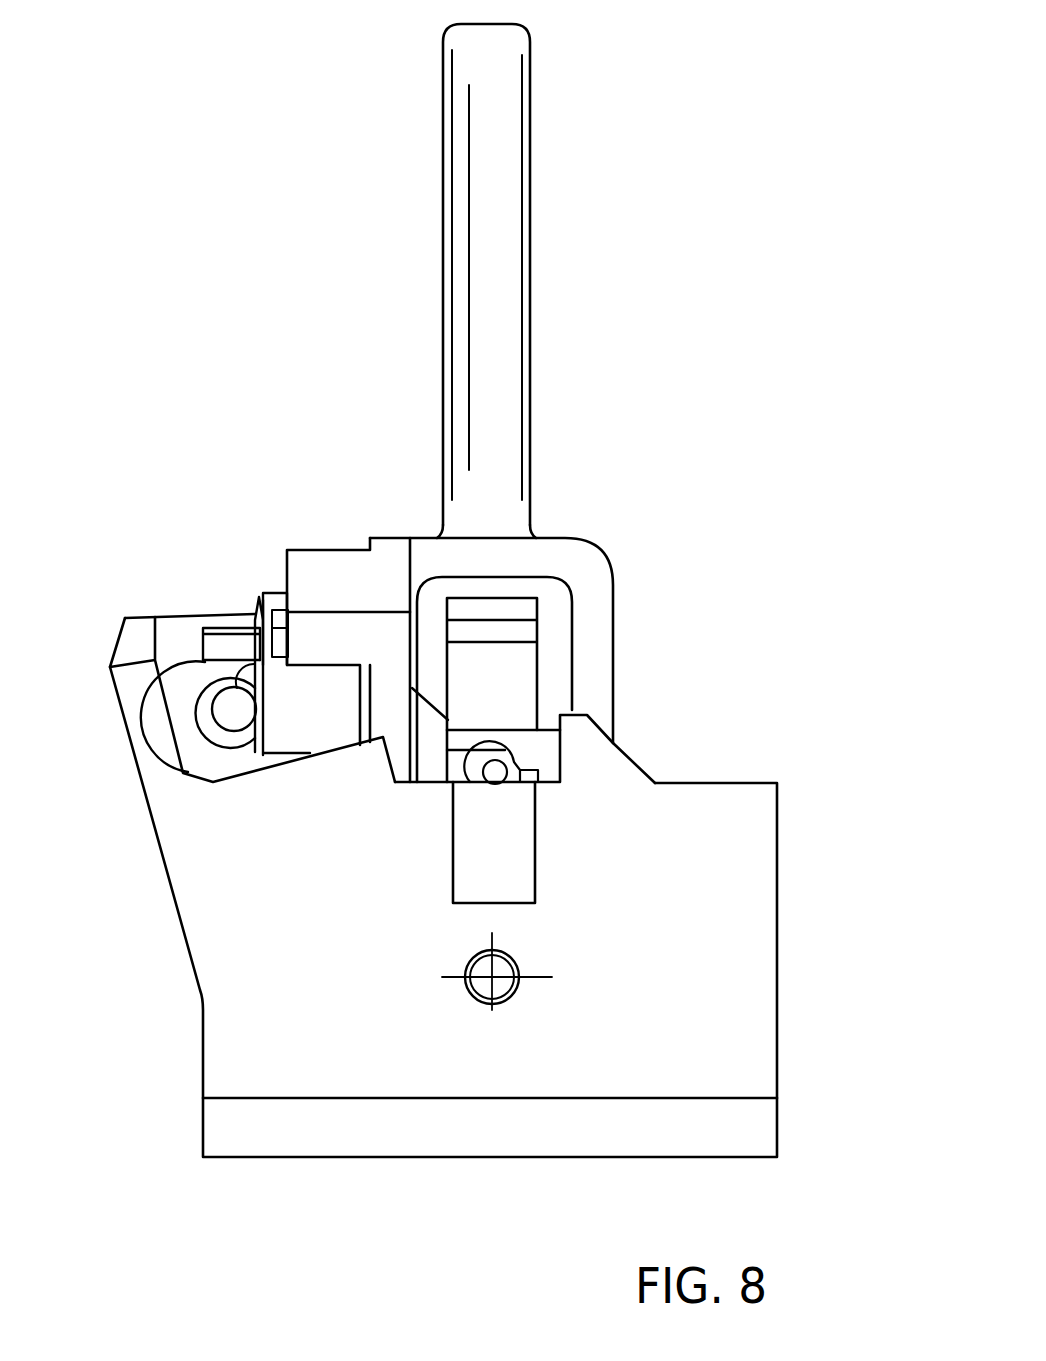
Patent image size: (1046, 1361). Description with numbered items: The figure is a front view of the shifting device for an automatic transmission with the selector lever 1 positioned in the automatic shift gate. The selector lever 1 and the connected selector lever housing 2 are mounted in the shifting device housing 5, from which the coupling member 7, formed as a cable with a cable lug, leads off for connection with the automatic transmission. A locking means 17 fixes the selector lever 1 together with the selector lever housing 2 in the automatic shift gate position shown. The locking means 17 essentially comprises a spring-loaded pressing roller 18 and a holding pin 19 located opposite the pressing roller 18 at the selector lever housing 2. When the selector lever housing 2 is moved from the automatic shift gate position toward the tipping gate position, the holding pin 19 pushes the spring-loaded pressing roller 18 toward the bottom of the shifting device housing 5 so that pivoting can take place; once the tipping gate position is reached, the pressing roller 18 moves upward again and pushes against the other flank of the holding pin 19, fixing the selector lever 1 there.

The selector lever 1 is at (503, 293).
The selector lever housing 2 is at (585, 575).
The shifting device housing 5 is at (732, 952).
The coupling member 7 is at (233, 703).
The locking means 17 is at (518, 721).
The pressing roller 18 is at (505, 756).
The holding pin 19 is at (538, 752).